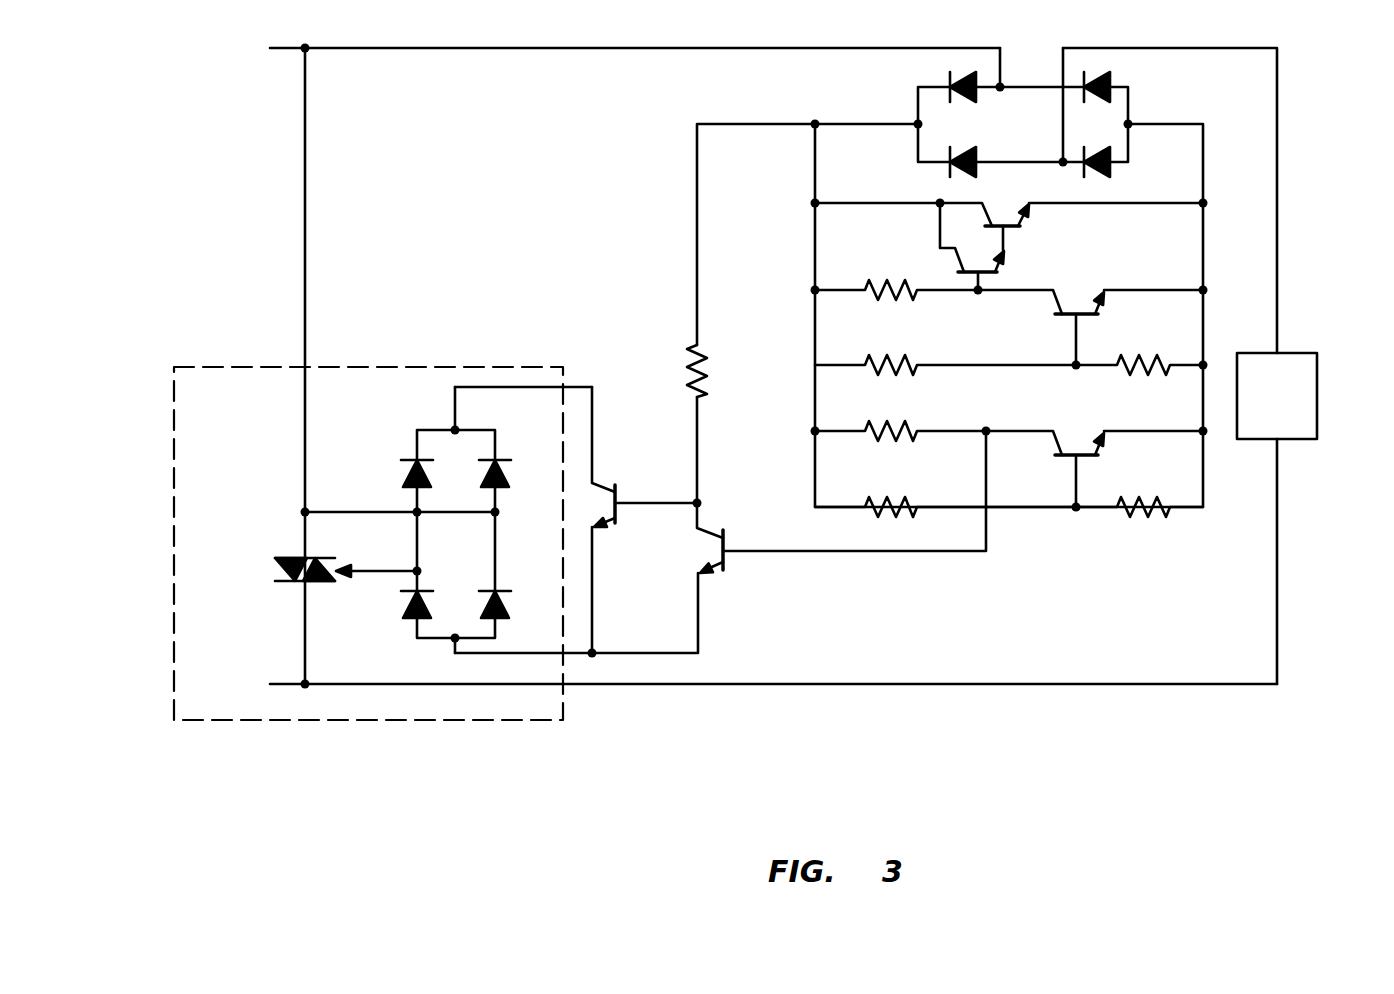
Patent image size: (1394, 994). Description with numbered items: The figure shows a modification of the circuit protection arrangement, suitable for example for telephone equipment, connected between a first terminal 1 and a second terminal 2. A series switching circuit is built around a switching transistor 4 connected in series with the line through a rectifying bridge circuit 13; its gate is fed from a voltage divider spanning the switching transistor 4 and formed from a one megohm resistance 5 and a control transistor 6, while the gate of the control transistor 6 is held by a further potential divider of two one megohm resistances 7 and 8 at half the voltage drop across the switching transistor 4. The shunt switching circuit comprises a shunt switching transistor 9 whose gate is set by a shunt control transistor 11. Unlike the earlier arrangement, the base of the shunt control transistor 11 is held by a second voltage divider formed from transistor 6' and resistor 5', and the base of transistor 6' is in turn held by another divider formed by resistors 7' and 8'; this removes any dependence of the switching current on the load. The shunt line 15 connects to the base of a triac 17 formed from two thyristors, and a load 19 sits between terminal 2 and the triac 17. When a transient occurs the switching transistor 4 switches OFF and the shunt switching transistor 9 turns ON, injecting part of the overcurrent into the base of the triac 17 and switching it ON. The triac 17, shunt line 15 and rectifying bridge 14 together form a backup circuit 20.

The terminal 1 is at (297, 51).
The terminal 2 is at (1185, 48).
The switching transistor 4 is at (1022, 247).
The resistance 5 is at (896, 273).
The resistor 5' is at (903, 414).
The control transistor 6 is at (1090, 311).
The transistor 6' is at (1094, 452).
The resistance 7 is at (945, 348).
The resistor 7' is at (945, 489).
The resistance 8 is at (1139, 381).
The resistor 8' is at (1139, 526).
The shunt switching transistor 9 is at (620, 493).
The shunt control transistor 11 is at (722, 537).
The rectifying bridge circuit 13 is at (918, 88).
The rectifying bridge 14 is at (441, 430).
The shunt line 15 is at (387, 574).
The triac 17 is at (275, 569).
The load 19 is at (1297, 432).
The backup circuit 20 is at (478, 720).